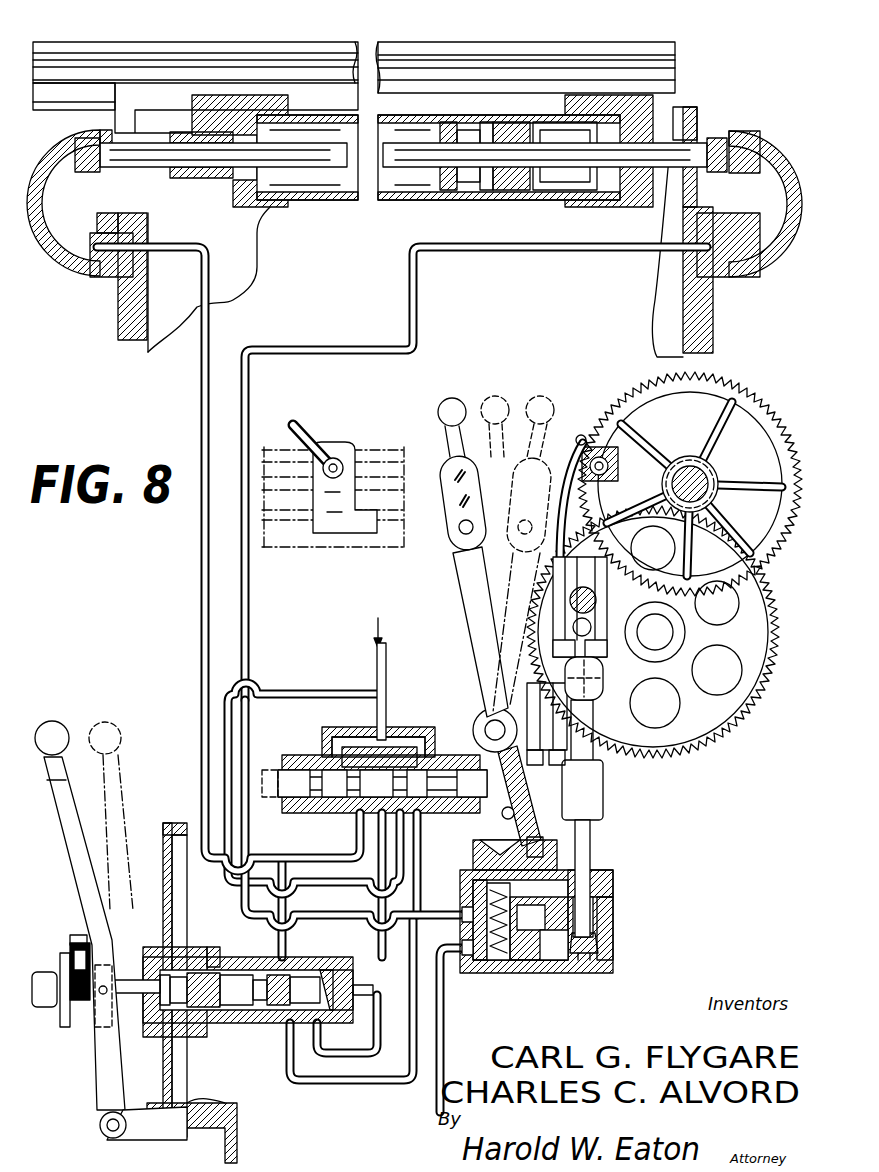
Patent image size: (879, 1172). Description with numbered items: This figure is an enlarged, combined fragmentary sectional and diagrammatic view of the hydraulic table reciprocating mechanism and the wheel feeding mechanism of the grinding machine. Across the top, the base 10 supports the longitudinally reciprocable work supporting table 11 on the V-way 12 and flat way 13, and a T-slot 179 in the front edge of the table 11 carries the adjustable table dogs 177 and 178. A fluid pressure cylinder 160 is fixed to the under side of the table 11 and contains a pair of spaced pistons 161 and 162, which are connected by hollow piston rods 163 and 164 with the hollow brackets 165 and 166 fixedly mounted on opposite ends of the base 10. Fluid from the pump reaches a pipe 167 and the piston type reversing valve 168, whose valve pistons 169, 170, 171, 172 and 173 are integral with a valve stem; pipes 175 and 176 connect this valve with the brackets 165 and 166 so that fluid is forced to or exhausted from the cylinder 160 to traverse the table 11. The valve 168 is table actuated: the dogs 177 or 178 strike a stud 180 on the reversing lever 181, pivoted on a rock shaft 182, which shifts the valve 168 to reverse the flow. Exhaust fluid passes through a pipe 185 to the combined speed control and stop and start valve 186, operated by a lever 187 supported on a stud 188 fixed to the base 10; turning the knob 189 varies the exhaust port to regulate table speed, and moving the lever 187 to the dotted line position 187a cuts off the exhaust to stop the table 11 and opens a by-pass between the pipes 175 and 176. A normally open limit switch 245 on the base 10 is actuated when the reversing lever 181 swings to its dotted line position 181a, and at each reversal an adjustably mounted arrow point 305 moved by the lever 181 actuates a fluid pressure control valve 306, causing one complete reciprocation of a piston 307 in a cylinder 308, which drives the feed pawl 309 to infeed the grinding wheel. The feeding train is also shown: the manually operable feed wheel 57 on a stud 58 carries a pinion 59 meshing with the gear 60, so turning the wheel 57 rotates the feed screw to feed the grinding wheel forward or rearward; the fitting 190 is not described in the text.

The base 10 is at (165, 333).
The work supporting table 11 is at (196, 50).
The V-way 12 is at (120, 122).
The flat way 13 is at (83, 98).
The manually operable feed wheel 57 is at (757, 396).
The stud 58 is at (689, 464).
The pinion 59 is at (710, 470).
The gear 60 is at (706, 723).
The fluid pressure cylinder 160 is at (332, 200).
The piston 161 is at (450, 192).
The piston 162 is at (522, 192).
The hollow piston rod 163 is at (158, 168).
The hollow piston rod 164 is at (715, 140).
The hollow bracket 165 is at (66, 262).
The hollow bracket 166 is at (790, 248).
The pipe 167 is at (387, 698).
The reversing valve 168 is at (318, 726).
The valve piston 169 is at (292, 768).
The valve piston 170 is at (340, 800).
The valve piston 171 is at (370, 858).
The valve piston 172 is at (419, 803).
The valve piston 173 is at (452, 805).
The pipe 175 is at (198, 246).
The pipe 176 is at (625, 252).
The adjustable table dog 177 is at (336, 522).
The adjustable table dog 178 is at (607, 492).
The T-slot 179 is at (292, 62).
The stud 180 is at (520, 522).
The reversing lever 181 is at (470, 595).
The dotted line position of reversing lever 181a is at (555, 400).
The rock shaft 182 is at (482, 728).
The pipe 185 is at (378, 940).
The combined speed control and stop and start valve 186 is at (234, 1024).
The lever 187 is at (78, 870).
The dotted line position of lever 187a is at (127, 808).
The stud 188 is at (103, 1131).
The manually operable knob 189 is at (42, 1007).
The fitting 190 is at (367, 1000).
The normally open limit switch 245 is at (560, 745).
The adjustably mounted arrow point 305 is at (533, 818).
The fluid pressure control valve 306 is at (457, 898).
The piston 307 is at (613, 947).
The cylinder 308 is at (613, 920).
The feed pawl 309 is at (576, 436).